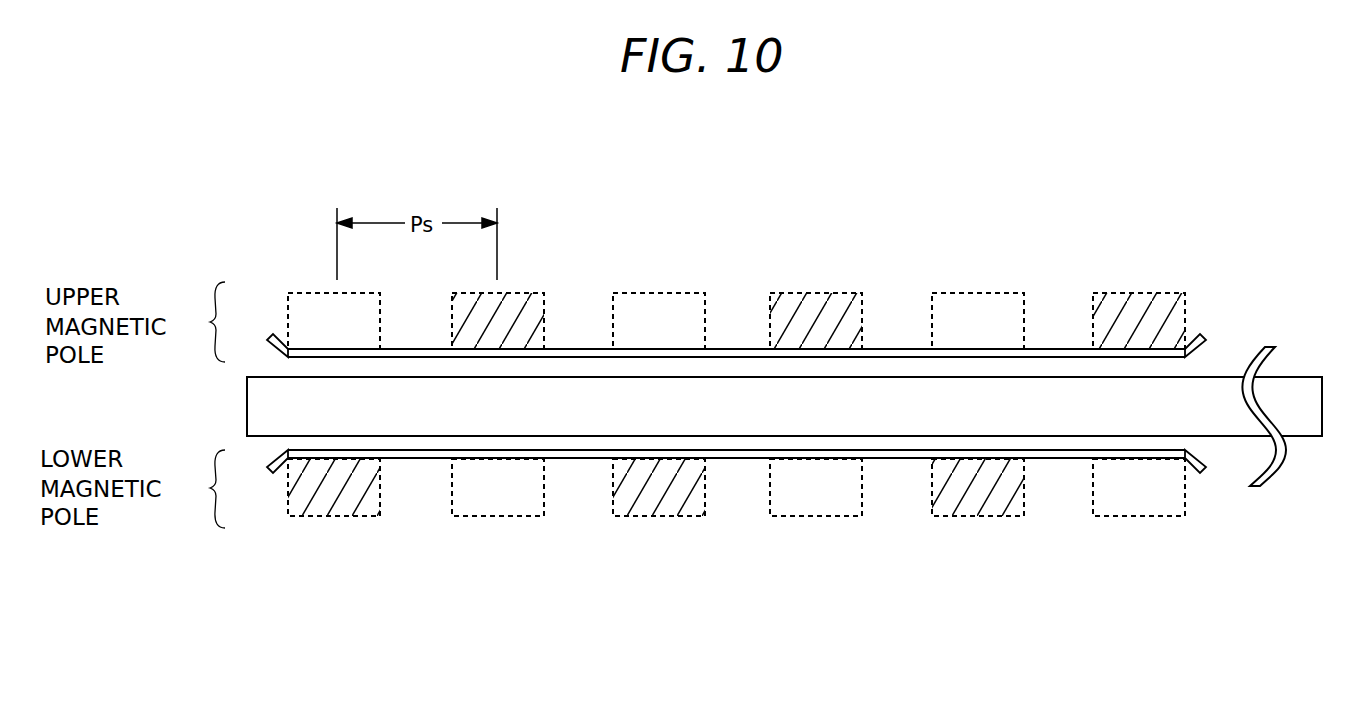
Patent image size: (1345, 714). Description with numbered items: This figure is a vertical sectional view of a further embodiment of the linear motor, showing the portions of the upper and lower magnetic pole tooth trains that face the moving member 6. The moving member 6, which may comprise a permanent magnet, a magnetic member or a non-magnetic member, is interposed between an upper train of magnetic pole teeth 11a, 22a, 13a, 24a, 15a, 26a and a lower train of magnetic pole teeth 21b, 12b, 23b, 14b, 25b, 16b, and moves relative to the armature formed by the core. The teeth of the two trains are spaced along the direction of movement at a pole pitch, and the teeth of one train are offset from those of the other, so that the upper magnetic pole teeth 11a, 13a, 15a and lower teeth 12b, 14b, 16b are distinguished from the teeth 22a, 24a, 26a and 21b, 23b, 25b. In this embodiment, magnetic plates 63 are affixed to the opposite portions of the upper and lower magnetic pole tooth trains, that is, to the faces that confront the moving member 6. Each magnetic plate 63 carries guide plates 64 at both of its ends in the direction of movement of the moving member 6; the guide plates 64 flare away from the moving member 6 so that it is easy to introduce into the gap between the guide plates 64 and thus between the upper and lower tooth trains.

The moving member 6 is at (1218, 377).
The magnetic plate 63 is at (733, 349).
The guide plate 64 is at (1203, 335).
The upper magnetic pole tooth 11a is at (307, 292).
The upper magnetic pole tooth 22a is at (532, 292).
The upper magnetic pole tooth 13a is at (658, 292).
The upper magnetic pole tooth 24a is at (812, 292).
The upper magnetic pole tooth 15a is at (977, 292).
The upper magnetic pole tooth 26a is at (1135, 292).
The lower magnetic pole tooth 21b is at (337, 517).
The lower magnetic pole tooth 12b is at (497, 517).
The lower magnetic pole tooth 23b is at (665, 517).
The lower magnetic pole tooth 14b is at (815, 517).
The lower magnetic pole tooth 25b is at (985, 517).
The lower magnetic pole tooth 16b is at (1143, 517).